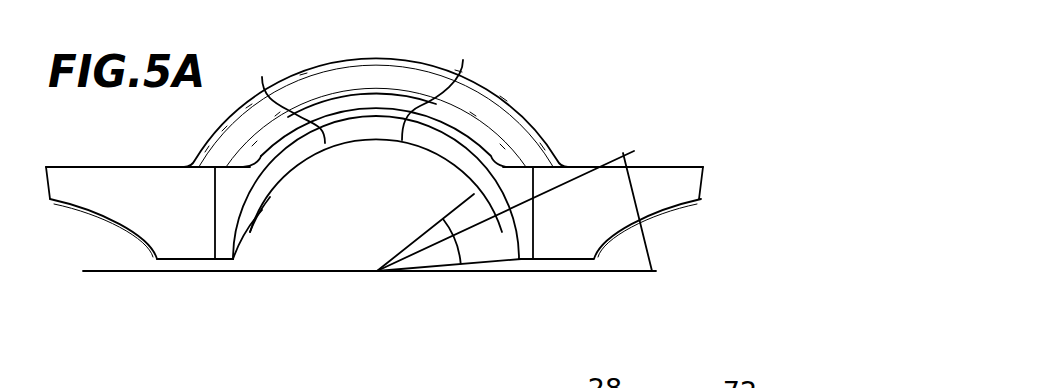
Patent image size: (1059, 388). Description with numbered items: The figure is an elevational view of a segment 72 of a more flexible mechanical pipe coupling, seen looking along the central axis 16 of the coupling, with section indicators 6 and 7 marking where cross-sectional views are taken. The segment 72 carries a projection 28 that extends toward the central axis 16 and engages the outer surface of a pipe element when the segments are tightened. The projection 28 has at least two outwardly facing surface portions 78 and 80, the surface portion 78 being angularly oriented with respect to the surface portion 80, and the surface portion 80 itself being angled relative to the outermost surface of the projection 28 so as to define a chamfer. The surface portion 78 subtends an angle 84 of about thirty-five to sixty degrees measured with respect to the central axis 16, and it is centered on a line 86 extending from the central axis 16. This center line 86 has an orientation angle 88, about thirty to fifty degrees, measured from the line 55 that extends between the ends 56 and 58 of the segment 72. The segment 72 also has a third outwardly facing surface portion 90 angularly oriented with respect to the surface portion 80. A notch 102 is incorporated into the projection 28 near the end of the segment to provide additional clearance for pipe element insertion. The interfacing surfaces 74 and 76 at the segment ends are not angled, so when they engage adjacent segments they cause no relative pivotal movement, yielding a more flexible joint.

The section line 6- 6 is at (200, 25).
The section line 7- 7 is at (328, 25).
The central axis 16 is at (377, 272).
The projection 28 is at (440, 86).
The line 55 is at (102, 272).
The end 56 is at (195, 252).
The end 58 is at (557, 250).
The segment 72 is at (558, 82).
The interfacing surface 74 is at (177, 259).
The interfacing surface 76 is at (573, 260).
The surface portion 78 is at (505, 236).
The surface portion 80 is at (285, 96).
The angle 84 is at (433, 228).
The center line 86 is at (610, 163).
The orientation angle 88 is at (653, 249).
The third outwardly facing surface portion 90 is at (248, 232).
The notch 102 is at (233, 252).